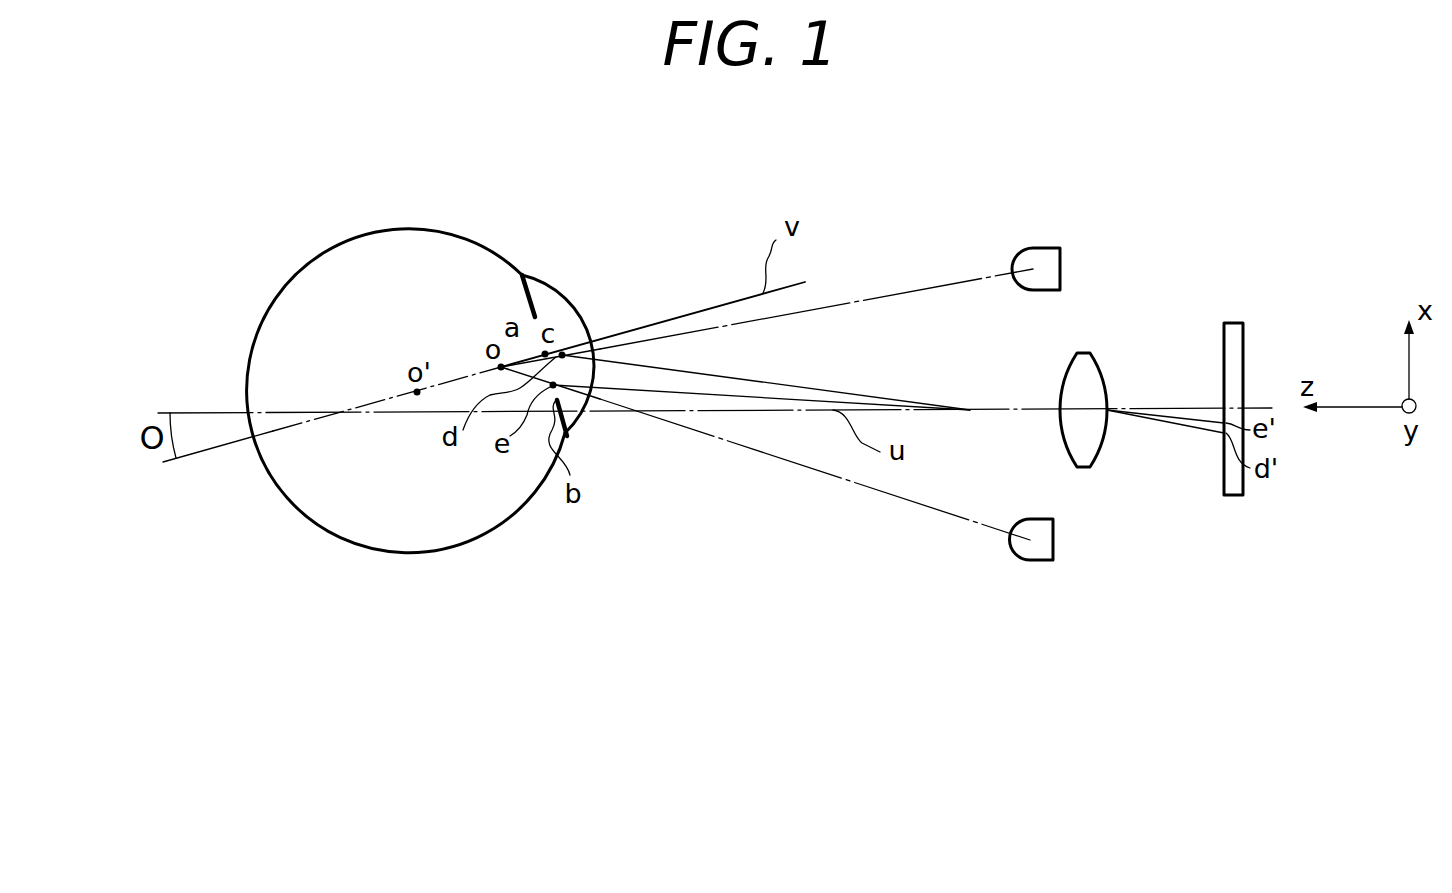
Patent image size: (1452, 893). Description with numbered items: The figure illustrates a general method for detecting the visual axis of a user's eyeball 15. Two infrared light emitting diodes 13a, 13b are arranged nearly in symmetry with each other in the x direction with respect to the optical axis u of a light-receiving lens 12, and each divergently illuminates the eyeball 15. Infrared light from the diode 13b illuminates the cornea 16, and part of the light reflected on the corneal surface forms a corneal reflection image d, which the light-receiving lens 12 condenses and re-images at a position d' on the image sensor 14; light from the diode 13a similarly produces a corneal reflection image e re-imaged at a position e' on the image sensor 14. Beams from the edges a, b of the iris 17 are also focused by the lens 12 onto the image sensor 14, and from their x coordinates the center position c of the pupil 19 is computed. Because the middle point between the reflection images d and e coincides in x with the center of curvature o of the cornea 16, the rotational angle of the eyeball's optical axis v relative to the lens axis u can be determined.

The light-receiving lens 12 is at (1100, 447).
The infrared light emitting diode 13a is at (1045, 562).
The infrared light emitting diode 13b is at (1056, 247).
The image sensor 14 is at (1243, 323).
The eyeball 15 is at (442, 543).
The cornea 16 is at (558, 290).
The iris 17 is at (525, 273).
The pupil 19 is at (540, 322).